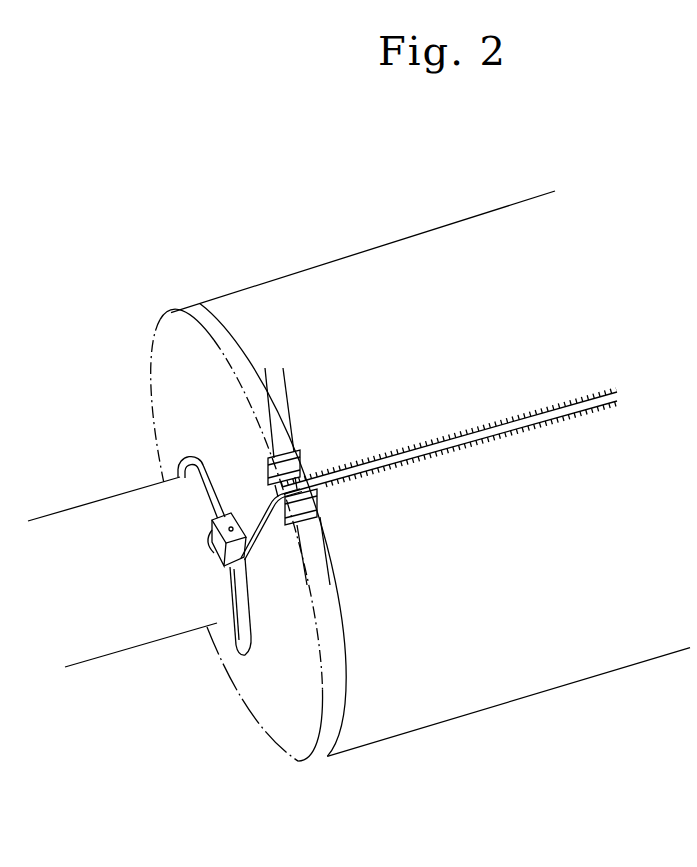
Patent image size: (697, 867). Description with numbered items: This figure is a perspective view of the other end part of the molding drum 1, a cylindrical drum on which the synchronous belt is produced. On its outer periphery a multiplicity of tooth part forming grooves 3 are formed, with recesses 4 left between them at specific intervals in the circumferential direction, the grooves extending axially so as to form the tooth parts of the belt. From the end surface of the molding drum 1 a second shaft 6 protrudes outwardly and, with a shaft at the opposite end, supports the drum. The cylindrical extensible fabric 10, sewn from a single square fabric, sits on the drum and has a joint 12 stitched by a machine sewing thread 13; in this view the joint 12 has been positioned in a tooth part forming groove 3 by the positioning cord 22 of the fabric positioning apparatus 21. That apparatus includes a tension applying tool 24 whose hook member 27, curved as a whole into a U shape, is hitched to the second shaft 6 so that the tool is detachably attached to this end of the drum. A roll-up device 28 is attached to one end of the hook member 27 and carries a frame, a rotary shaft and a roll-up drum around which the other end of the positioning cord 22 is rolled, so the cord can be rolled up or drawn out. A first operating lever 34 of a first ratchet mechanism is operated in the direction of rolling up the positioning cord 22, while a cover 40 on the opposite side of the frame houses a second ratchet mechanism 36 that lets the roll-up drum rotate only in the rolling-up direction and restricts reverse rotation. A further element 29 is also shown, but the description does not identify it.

The molding drum 1 is at (155, 322).
The tooth part forming grooves 3 is at (284, 457).
The recesses 4 is at (312, 490).
The second shaft 6 is at (86, 504).
The extensible fabric 10 is at (450, 223).
The joint 12 is at (484, 425).
The machine sewing thread 13 is at (440, 452).
The fabric positioning apparatus 21 is at (162, 416).
The positioning cord 22 is at (256, 447).
The tension applying tool 24 is at (183, 452).
The hook member 27 is at (208, 450).
The roll-up device 28 is at (216, 576).
The spring wire 29 is at (221, 469).
The first operating lever 34 is at (254, 636).
The second ratchet mechanism 36 is at (212, 523).
The cover 40 is at (222, 514).